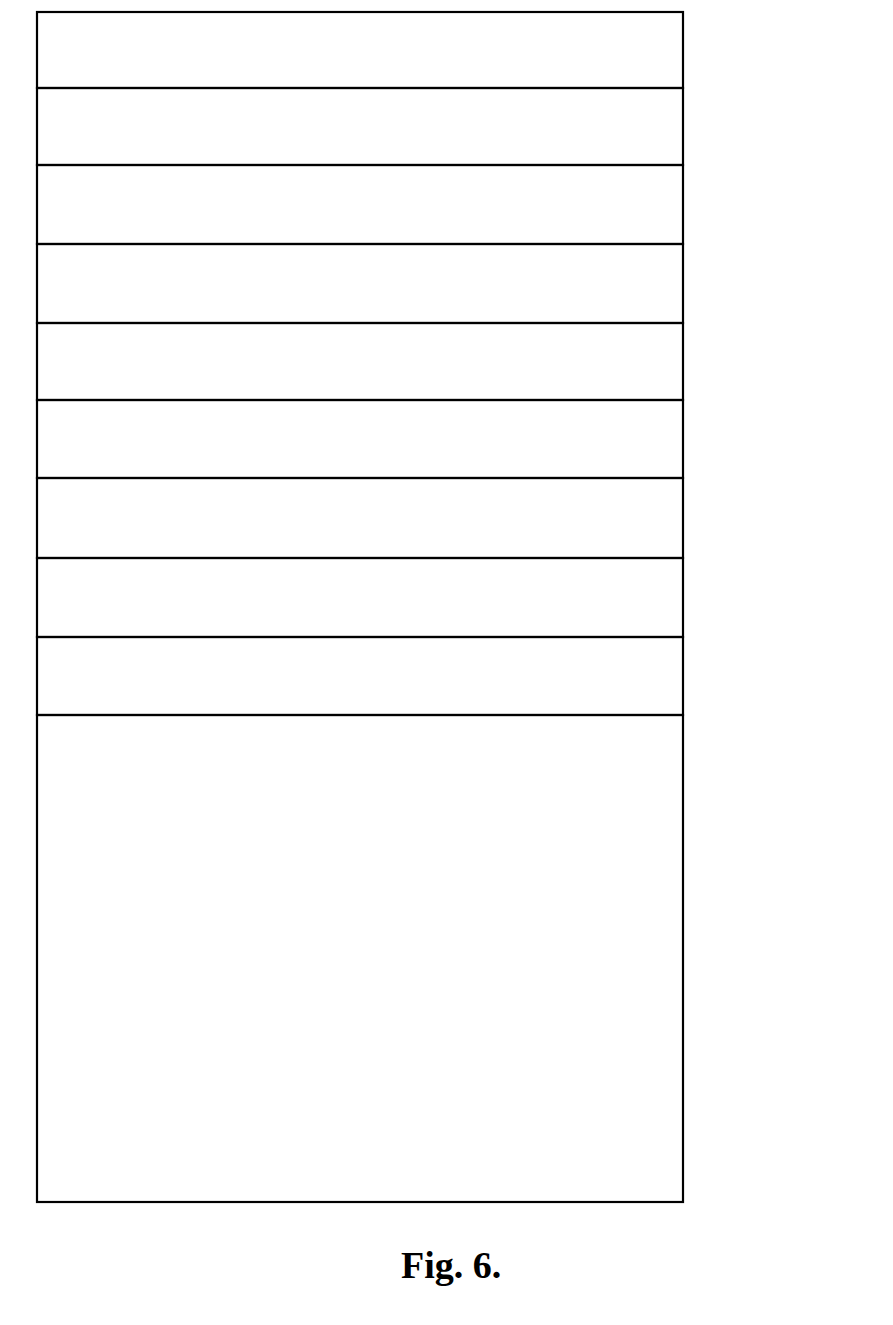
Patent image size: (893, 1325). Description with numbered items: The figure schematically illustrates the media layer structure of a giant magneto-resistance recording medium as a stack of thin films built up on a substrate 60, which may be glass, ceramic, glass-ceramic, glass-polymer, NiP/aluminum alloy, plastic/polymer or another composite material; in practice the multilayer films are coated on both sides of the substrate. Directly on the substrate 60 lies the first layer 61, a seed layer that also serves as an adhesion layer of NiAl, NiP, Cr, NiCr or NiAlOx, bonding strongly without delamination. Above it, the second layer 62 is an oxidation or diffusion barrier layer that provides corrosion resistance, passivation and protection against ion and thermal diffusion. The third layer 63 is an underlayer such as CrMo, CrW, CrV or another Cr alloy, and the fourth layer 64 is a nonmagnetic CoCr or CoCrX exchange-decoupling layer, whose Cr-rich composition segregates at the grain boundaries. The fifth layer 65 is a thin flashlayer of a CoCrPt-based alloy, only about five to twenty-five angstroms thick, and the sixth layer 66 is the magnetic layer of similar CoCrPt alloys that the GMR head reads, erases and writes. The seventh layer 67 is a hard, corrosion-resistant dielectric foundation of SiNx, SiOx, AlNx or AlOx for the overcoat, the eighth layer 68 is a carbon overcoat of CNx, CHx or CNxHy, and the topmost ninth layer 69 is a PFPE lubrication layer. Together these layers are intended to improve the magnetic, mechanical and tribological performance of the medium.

The substrate 60 is at (712, 965).
The first layer 61 is at (712, 663).
The second layer 62 is at (712, 583).
The third layer 63 is at (712, 503).
The fourth layer 64 is at (712, 425).
The fifth layer 65 is at (712, 348).
The sixth layer 66 is at (712, 269).
The seventh layer 67 is at (712, 190).
The eighth layer 68 is at (712, 113).
The ninth layer 69 is at (712, 37).